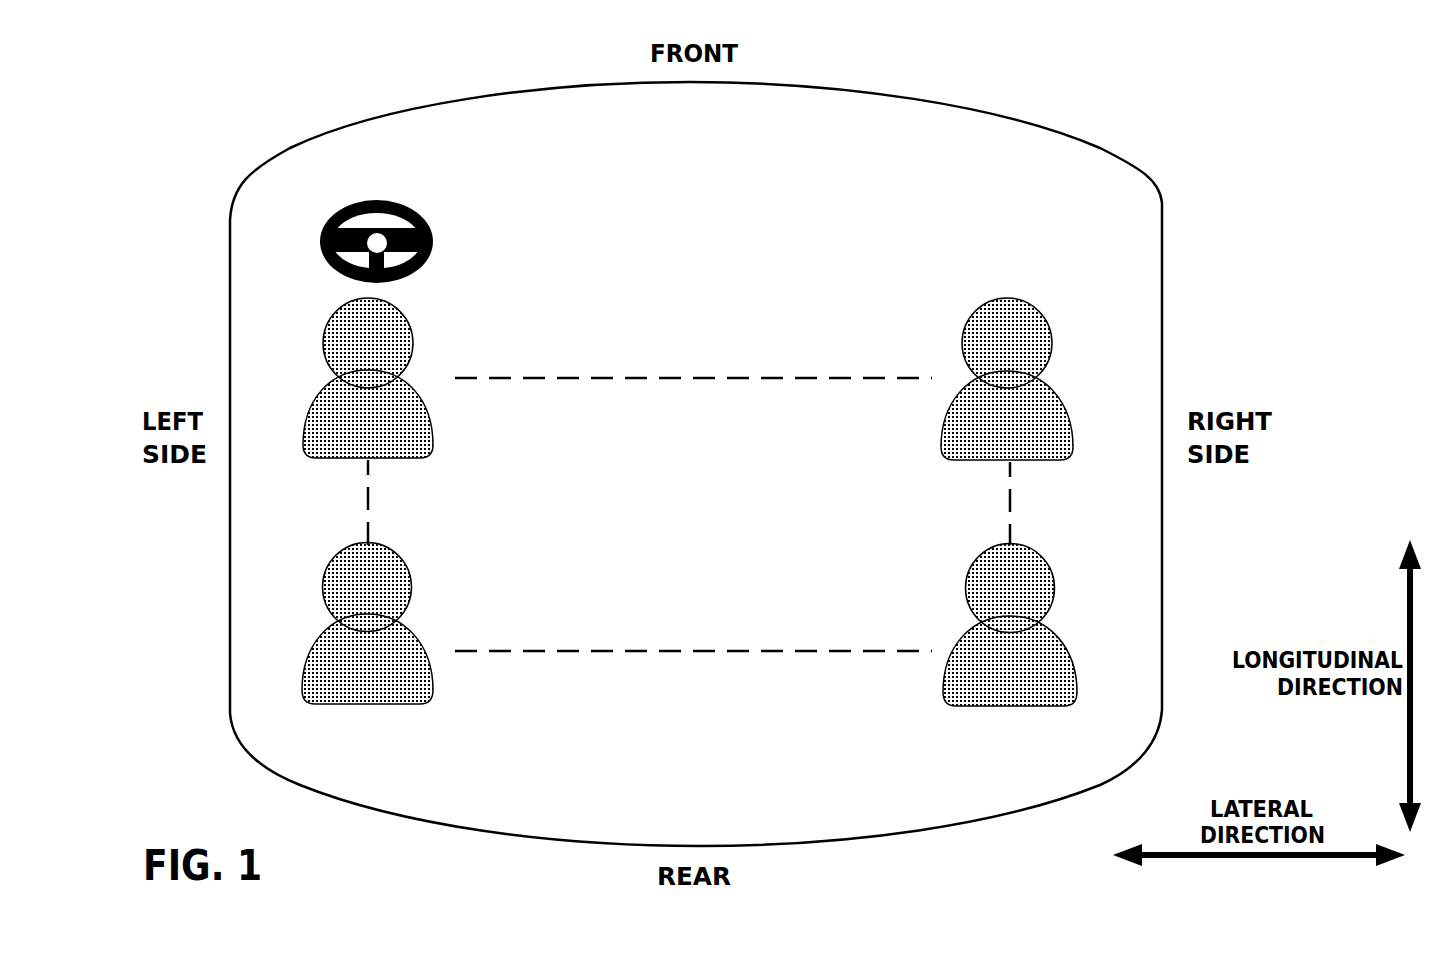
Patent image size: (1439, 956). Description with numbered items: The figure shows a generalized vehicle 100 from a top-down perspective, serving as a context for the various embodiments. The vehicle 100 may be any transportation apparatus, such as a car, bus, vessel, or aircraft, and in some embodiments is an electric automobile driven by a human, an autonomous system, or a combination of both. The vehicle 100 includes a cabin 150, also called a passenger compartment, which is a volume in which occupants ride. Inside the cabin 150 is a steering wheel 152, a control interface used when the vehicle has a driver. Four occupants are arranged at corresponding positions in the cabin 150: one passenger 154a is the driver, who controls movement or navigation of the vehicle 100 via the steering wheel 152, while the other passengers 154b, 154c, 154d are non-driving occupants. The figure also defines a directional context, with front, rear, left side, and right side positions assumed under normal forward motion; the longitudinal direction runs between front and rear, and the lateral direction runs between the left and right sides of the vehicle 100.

The vehicle 100 is at (1040, 126).
The cabin 150 is at (716, 127).
The steering wheel 152 is at (435, 243).
The passenger 154a is at (417, 332).
The passenger 154b is at (1045, 320).
The passenger 154c is at (410, 570).
The passenger 154d is at (1053, 568).